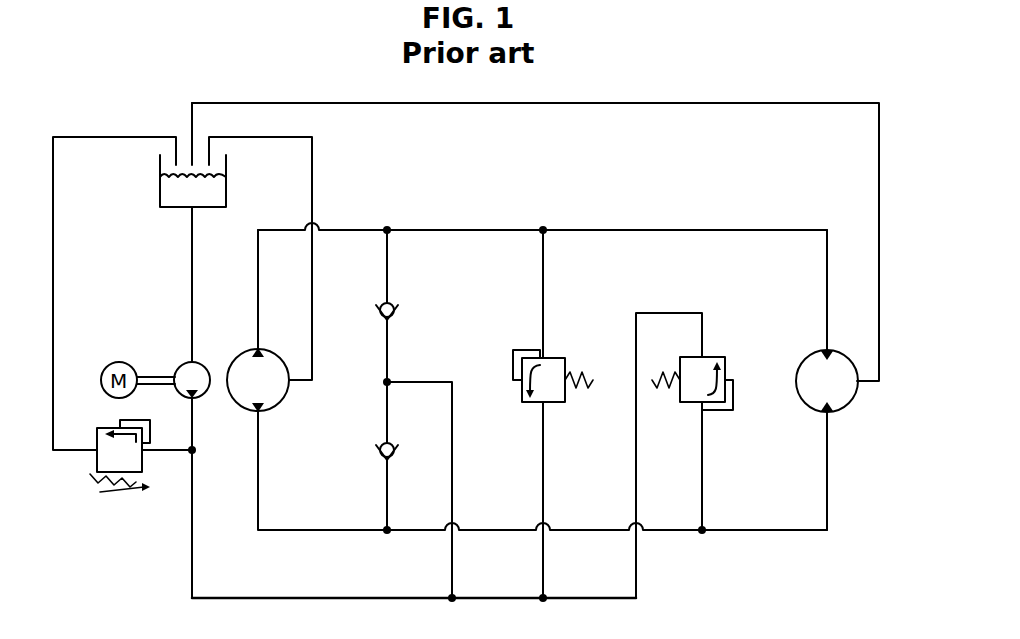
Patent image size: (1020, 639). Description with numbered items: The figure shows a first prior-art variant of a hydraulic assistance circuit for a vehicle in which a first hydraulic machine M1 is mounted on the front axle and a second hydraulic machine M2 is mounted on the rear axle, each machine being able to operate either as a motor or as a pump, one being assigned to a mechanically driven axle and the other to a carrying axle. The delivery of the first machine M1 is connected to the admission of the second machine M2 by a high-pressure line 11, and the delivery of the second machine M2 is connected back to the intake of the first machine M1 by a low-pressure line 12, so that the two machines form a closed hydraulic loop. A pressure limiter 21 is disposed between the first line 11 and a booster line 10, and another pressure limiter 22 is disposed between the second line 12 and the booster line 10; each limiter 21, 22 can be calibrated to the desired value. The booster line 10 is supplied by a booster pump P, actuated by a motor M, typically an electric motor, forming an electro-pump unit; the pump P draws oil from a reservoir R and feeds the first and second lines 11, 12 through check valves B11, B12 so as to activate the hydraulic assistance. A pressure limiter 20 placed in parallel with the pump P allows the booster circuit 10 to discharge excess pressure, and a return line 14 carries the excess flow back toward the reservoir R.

The booster line 10 is at (320, 598).
The high-pressure line 11 is at (828, 470).
The low-pressure line 12 is at (672, 230).
The drain line 14 is at (544, 103).
The pressure limiter 20 is at (95, 458).
The pressure limiter 21 is at (729, 366).
The pressure limiter 22 is at (520, 394).
The reservoir R is at (160, 190).
The booster pump P is at (178, 366).
The first hydraulic machine M1 is at (235, 356).
The second hydraulic machine M2 is at (846, 403).
The check valve B11 is at (382, 445).
The check valve B12 is at (396, 315).